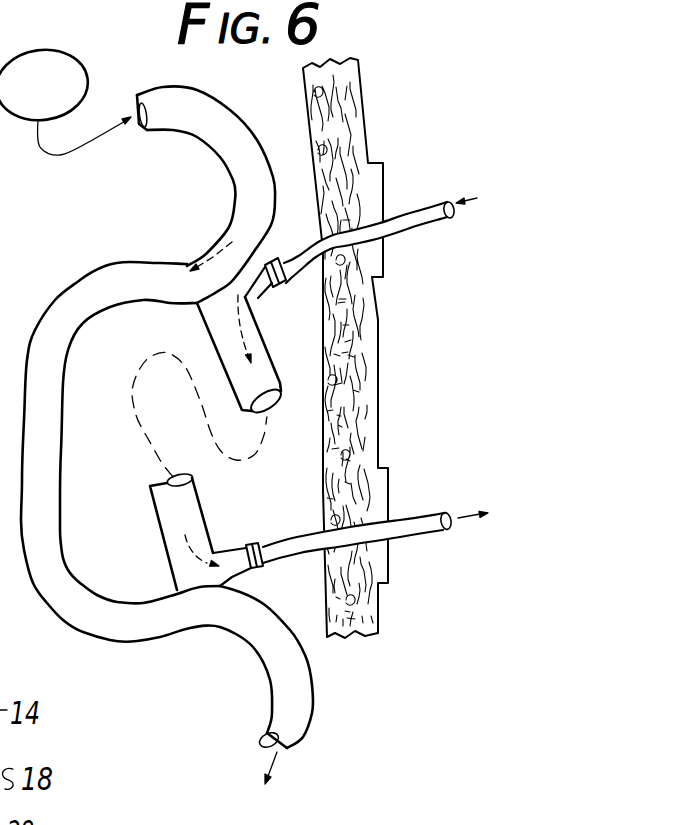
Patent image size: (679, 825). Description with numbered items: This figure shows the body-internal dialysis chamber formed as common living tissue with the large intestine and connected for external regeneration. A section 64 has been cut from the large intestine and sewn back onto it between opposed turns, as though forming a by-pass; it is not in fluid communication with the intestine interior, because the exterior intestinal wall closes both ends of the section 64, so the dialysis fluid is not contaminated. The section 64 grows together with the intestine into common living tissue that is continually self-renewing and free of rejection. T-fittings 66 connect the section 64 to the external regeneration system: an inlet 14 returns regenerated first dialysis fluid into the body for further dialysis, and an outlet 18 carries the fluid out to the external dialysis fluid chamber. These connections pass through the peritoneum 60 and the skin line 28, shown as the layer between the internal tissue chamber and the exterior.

The inlet 14 is at (418, 228).
The outlet 18 is at (418, 537).
The skin line 28 is at (380, 420).
The peritoneum 60 is at (343, 373).
The section 64 is at (287, 383).
The T-fittings 66 is at (258, 300).